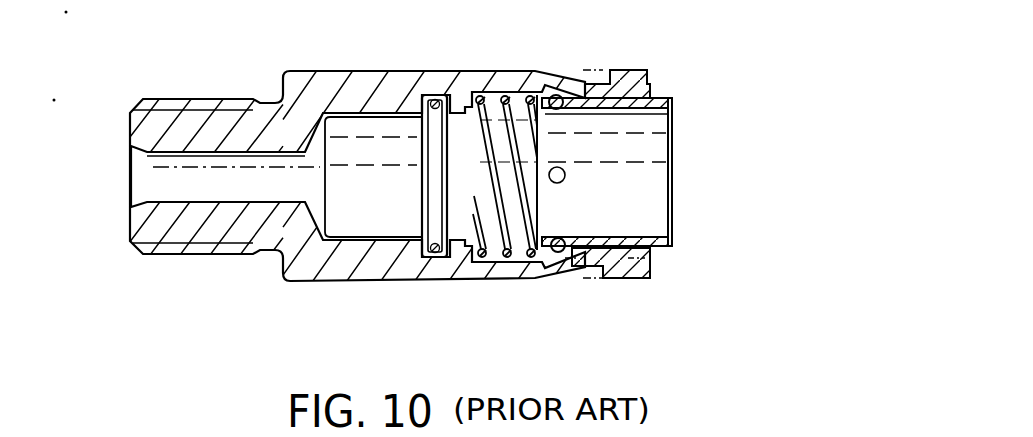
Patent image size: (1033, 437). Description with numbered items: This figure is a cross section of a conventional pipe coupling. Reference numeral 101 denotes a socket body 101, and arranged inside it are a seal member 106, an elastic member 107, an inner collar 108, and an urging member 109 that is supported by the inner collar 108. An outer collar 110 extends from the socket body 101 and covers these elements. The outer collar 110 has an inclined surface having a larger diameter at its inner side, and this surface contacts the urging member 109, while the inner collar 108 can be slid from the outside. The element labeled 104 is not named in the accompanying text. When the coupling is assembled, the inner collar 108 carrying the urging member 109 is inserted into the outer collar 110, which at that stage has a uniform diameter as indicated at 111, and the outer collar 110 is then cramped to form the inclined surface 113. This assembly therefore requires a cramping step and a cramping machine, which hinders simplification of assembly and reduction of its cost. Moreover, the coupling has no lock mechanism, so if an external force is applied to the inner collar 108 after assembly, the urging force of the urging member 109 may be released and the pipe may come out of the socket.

The socket body 101 is at (304, 70).
The valve plunger 104 is at (340, 226).
The seal member 106 is at (437, 207).
The elastic member 107 is at (512, 236).
The inner collar 108 is at (659, 96).
The urging member 109 is at (556, 94).
The outer collar 110 is at (612, 69).
The uniform diameter 111 is at (624, 266).
The inclined surface 113 is at (558, 266).